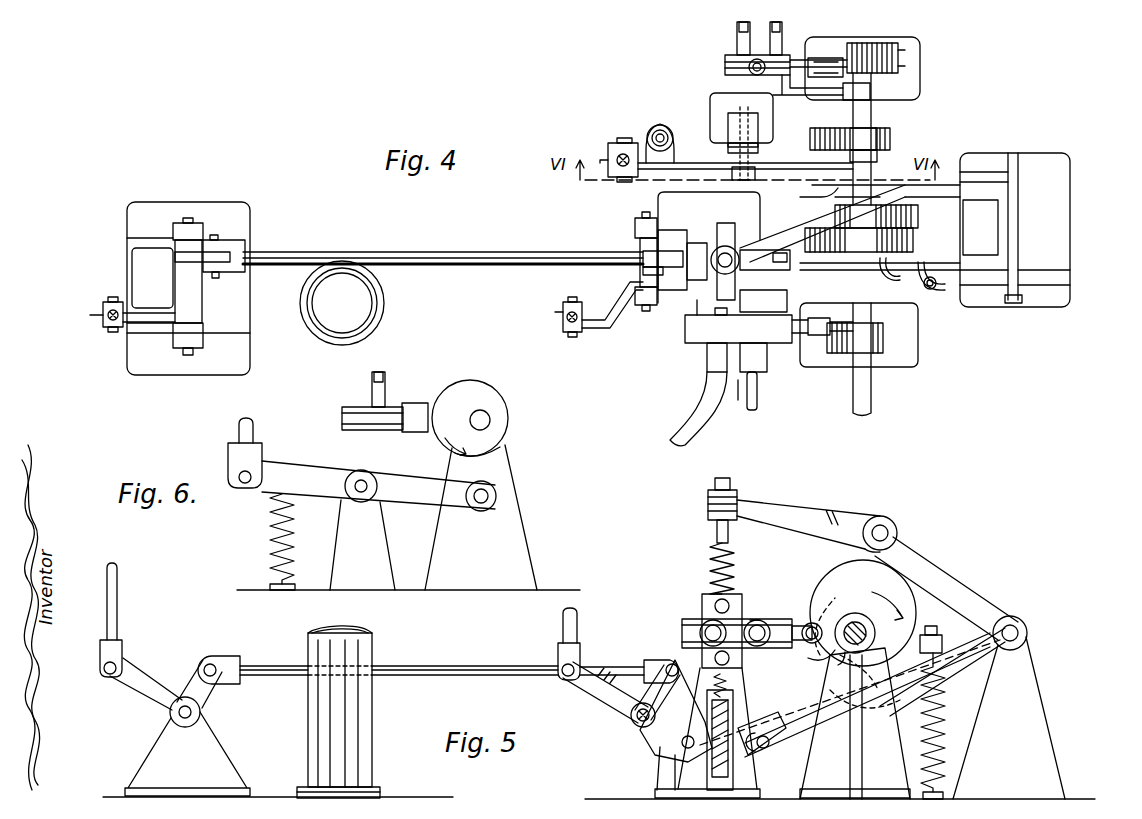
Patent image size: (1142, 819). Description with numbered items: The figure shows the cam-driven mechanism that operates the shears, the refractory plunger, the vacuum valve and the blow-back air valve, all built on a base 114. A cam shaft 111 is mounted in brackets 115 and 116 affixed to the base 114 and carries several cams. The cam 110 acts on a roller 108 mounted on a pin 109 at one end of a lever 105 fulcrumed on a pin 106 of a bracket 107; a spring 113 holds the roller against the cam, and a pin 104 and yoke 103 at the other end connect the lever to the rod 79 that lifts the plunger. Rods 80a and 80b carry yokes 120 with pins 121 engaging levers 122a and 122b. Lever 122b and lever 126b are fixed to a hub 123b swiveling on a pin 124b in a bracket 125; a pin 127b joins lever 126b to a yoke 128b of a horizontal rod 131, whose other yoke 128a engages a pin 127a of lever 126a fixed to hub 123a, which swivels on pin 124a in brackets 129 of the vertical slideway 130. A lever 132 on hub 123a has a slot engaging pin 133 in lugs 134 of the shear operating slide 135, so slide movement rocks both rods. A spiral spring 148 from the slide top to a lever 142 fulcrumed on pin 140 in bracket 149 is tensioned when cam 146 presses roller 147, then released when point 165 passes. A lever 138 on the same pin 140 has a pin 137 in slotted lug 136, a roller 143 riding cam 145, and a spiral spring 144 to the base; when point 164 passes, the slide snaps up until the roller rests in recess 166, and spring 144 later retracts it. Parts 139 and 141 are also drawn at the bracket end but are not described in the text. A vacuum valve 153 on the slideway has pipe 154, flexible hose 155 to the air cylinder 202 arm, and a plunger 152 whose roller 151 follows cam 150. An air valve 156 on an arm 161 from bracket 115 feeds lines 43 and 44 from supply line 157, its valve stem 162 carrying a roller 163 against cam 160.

In FIG. 4, the air line 43 is at (750, 22).
In FIG. 4, the air line 44 is at (778, 28).
In FIG. 4, the rod 79 is at (610, 158).
In FIG. 6, the rod 79 is at (240, 430).
In FIG. 4, the vertically reciprocating rod 80a is at (563, 311).
In FIG. 5, the vertically reciprocating rod 80a is at (563, 613).
In FIG. 4, the vertically reciprocating rod 80b is at (103, 315).
In FIG. 5, the vertically reciprocating rod 80b is at (117, 614).
In FIG. 4, the yoke 103 is at (608, 170).
In FIG. 6, the yoke 103 is at (232, 460).
In FIG. 4, the pin 104 is at (622, 138).
In FIG. 6, the pin 104 is at (243, 486).
In FIG. 4, the lever 105 is at (687, 160).
In FIG. 6, the lever 105 is at (330, 478).
In FIG. 4, the pin 106 is at (745, 117).
In FIG. 6, the pin 106 is at (373, 504).
In FIG. 4, the bracket 107 is at (715, 92).
In FIG. 6, the bracket 107 is at (372, 556).
In FIG. 4, the roller 108 is at (890, 155).
In FIG. 6, the roller 108 is at (496, 492).
In FIG. 6, the pin 109 is at (496, 503).
In FIG. 4, the cam 110 is at (890, 138).
In FIG. 6, the cam 110 is at (482, 400).
In FIG. 4, the shaft 111 is at (873, 120).
In FIG. 6, the shaft 111 is at (492, 422).
In FIG. 5, the shaft 111 is at (852, 623).
In FIG. 4, the spring 113 is at (660, 128).
In FIG. 6, the spring 113 is at (270, 540).
In FIG. 6, the base 114 is at (240, 590).
In FIG. 5, the base 114 is at (440, 797).
In FIG. 4, the bracket 115 is at (920, 82).
In FIG. 6, the bracket 115 is at (520, 541).
In FIG. 4, the bracket 116 is at (895, 367).
In FIG. 5, the bracket 116 is at (840, 678).
In FIG. 4, the yoke 120 is at (110, 300).
In FIG. 5, the yoke 120 is at (122, 650).
In FIG. 4, the pin 121 is at (113, 333).
In FIG. 5, the pin 121 is at (111, 675).
In FIG. 4, the lever 122a is at (607, 328).
In FIG. 5, the lever 122a is at (612, 700).
In FIG. 4, the lever 122b is at (148, 323).
In FIG. 5, the lever 122b is at (140, 692).
In FIG. 4, the hub 123a is at (645, 272).
In FIG. 5, the hub 123a is at (638, 722).
In FIG. 4, the hub 123b is at (200, 282).
In FIG. 4, the pin 124a is at (642, 216).
In FIG. 5, the pin 124a is at (645, 728).
In FIG. 4, the pin 124b is at (195, 222).
In FIG. 5, the pin 124b is at (201, 712).
In FIG. 4, the bracket 125 is at (240, 365).
In FIG. 5, the bracket 125 is at (210, 755).
In FIG. 4, the lever 126a is at (643, 257).
In FIG. 5, the lever 126a is at (660, 688).
In FIG. 4, the lever 126b is at (190, 257).
In FIG. 5, the lever 126b is at (193, 680).
In FIG. 5, the pin 127a is at (672, 655).
In FIG. 4, the pin 127b is at (218, 238).
In FIG. 5, the pin 127b is at (215, 662).
In FIG. 5, the yoke 128a is at (648, 660).
In FIG. 4, the yoke 128b is at (245, 256).
In FIG. 5, the yoke 128b is at (240, 665).
In FIG. 4, the projecting brackets 129 is at (700, 238).
In FIG. 5, the projecting brackets 129 is at (690, 650).
In FIG. 4, the vertical slideway 130 is at (697, 300).
In FIG. 5, the vertical slideway 130 is at (727, 705).
In FIG. 4, the horizontal rod 131 is at (392, 252).
In FIG. 5, the horizontal rod 131 is at (400, 666).
In FIG. 4, the lever 132 is at (680, 290).
In FIG. 5, the lever 132 is at (658, 777).
In FIG. 4, the pin 133 is at (693, 243).
In FIG. 5, the pin 133 is at (688, 750).
In FIG. 4, the projecting lugs 134 is at (745, 212).
In FIG. 5, the projecting lugs 134 is at (705, 690).
In FIG. 4, the shear operating slide 135 is at (760, 242).
In FIG. 5, the shear operating slide 135 is at (745, 791).
In FIG. 4, the projecting lug 136 is at (748, 302).
In FIG. 5, the projecting lug 136 is at (745, 733).
In FIG. 4, the pin 137 is at (790, 270).
In FIG. 5, the pin 137 is at (766, 750).
In FIG. 4, the lever 138 is at (822, 270).
In FIG. 5, the lever 138 is at (800, 742).
In FIG. 4, the shaft 139 is at (1030, 250).
In FIG. 4, the pin 140 is at (1020, 305).
In FIG. 5, the pin 140 is at (1028, 633).
In FIG. 4, the frame 141 is at (1035, 213).
In FIG. 4, the lever 142 is at (965, 202).
In FIG. 5, the lever 142 is at (955, 583).
In FIG. 4, the roller 143 is at (900, 265).
In FIG. 5, the roller 143 is at (875, 718).
In FIG. 4, the spiral spring 144 is at (940, 292).
In FIG. 5, the spiral spring 144 is at (945, 713).
In FIG. 4, the cam 145 is at (905, 243).
In FIG. 5, the cam 145 is at (815, 654).
In FIG. 4, the cam 146 is at (900, 222).
In FIG. 5, the cam 146 is at (920, 598).
In FIG. 4, the roller 147 is at (918, 198).
In FIG. 5, the roller 147 is at (898, 532).
In FIG. 4, the spiral spring 148 is at (712, 322).
In FIG. 5, the spiral spring 148 is at (735, 575).
In FIG. 4, the bracket 149 is at (1055, 270).
In FIG. 5, the bracket 149 is at (1040, 733).
In FIG. 4, the valve operating cam 150 is at (885, 340).
In FIG. 5, the valve operating cam 150 is at (870, 598).
In FIG. 4, the roller 151 is at (820, 337).
In FIG. 5, the roller 151 is at (840, 658).
In FIG. 4, the plunger 152 is at (790, 343).
In FIG. 5, the plunger 152 is at (808, 623).
In FIG. 4, the vacuum valve 153 is at (738, 380).
In FIG. 5, the vacuum valve 153 is at (717, 580).
In FIG. 4, the pipe 154 is at (752, 405).
In FIG. 5, the pipe 154 is at (755, 620).
In FIG. 4, the flexible vacuum hose 155 is at (690, 435).
In FIG. 5, the flexible vacuum hose 155 is at (708, 505).
In FIG. 4, the air valve 156 is at (725, 62).
In FIG. 6, the air valve 156 is at (345, 415).
In FIG. 4, the air supply line 157 is at (740, 40).
In FIG. 6, the air supply line 157 is at (386, 382).
In FIG. 4, the valve operating cam 160 is at (898, 58).
In FIG. 4, the arm 161 is at (820, 100).
In FIG. 6, the arm 161 is at (413, 433).
In FIG. 4, the valve stem 162 is at (820, 62).
In FIG. 4, the roller 163 is at (868, 55).
In FIG. 5, the point 164 is at (905, 676).
In FIG. 5, the point 165 is at (892, 548).
In FIG. 5, the recess 166 is at (920, 648).
In FIG. 4, the air cylinder 202 is at (375, 300).
In FIG. 5, the air cylinder 202 is at (372, 706).